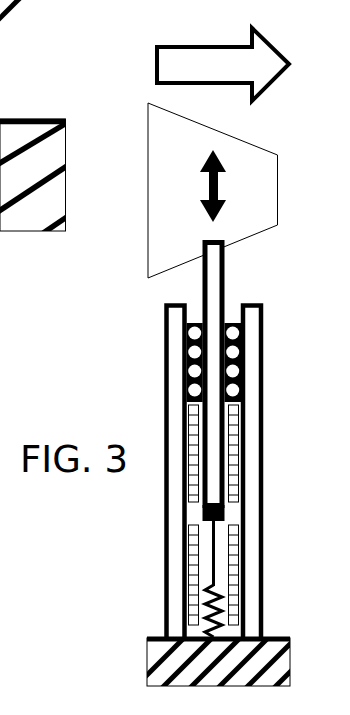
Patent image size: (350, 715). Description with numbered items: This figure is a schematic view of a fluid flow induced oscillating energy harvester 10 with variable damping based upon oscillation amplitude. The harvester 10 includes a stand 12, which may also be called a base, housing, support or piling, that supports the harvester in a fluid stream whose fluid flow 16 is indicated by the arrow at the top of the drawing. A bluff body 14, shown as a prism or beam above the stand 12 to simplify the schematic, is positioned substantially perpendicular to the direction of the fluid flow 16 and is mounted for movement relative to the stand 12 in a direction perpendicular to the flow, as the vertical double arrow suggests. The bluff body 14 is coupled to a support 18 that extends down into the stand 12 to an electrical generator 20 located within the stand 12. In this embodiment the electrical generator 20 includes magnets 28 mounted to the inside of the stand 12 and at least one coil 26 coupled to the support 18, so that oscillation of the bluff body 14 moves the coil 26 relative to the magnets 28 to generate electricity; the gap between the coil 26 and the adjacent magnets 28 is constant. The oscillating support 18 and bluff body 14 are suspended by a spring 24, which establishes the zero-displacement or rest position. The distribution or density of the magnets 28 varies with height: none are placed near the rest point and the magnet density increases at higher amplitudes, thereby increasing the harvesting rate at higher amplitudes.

The oscillating energy harvester 10 is at (287, 296).
The stand 12 is at (263, 353).
The bluff body 14 is at (279, 170).
The fluid flow 16 is at (155, 70).
The support 18 is at (225, 290).
The electrical generator 20 is at (231, 512).
The spring 24 is at (0, 72).
The coil 26 is at (203, 511).
The magnets 28 is at (233, 420).